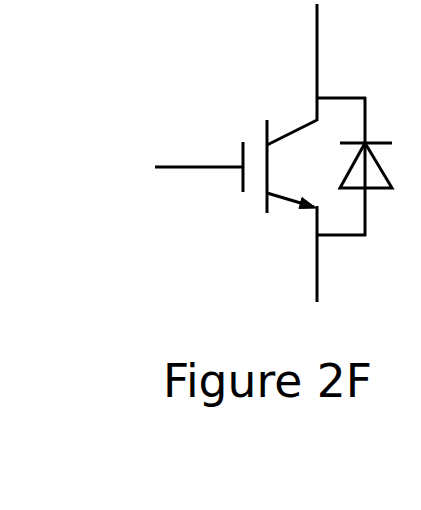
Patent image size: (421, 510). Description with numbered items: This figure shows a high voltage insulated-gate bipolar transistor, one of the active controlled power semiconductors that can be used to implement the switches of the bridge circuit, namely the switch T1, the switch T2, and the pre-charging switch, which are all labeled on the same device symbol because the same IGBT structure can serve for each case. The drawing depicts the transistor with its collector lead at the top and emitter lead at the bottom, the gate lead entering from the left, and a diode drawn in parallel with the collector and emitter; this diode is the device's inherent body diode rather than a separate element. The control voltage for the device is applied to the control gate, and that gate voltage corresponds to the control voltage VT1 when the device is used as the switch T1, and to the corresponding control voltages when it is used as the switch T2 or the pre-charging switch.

The switch T1 is at (242, 136).
The switch T2 is at (354, 166).
The control voltage for switch T1 VT1 is at (159, 148).